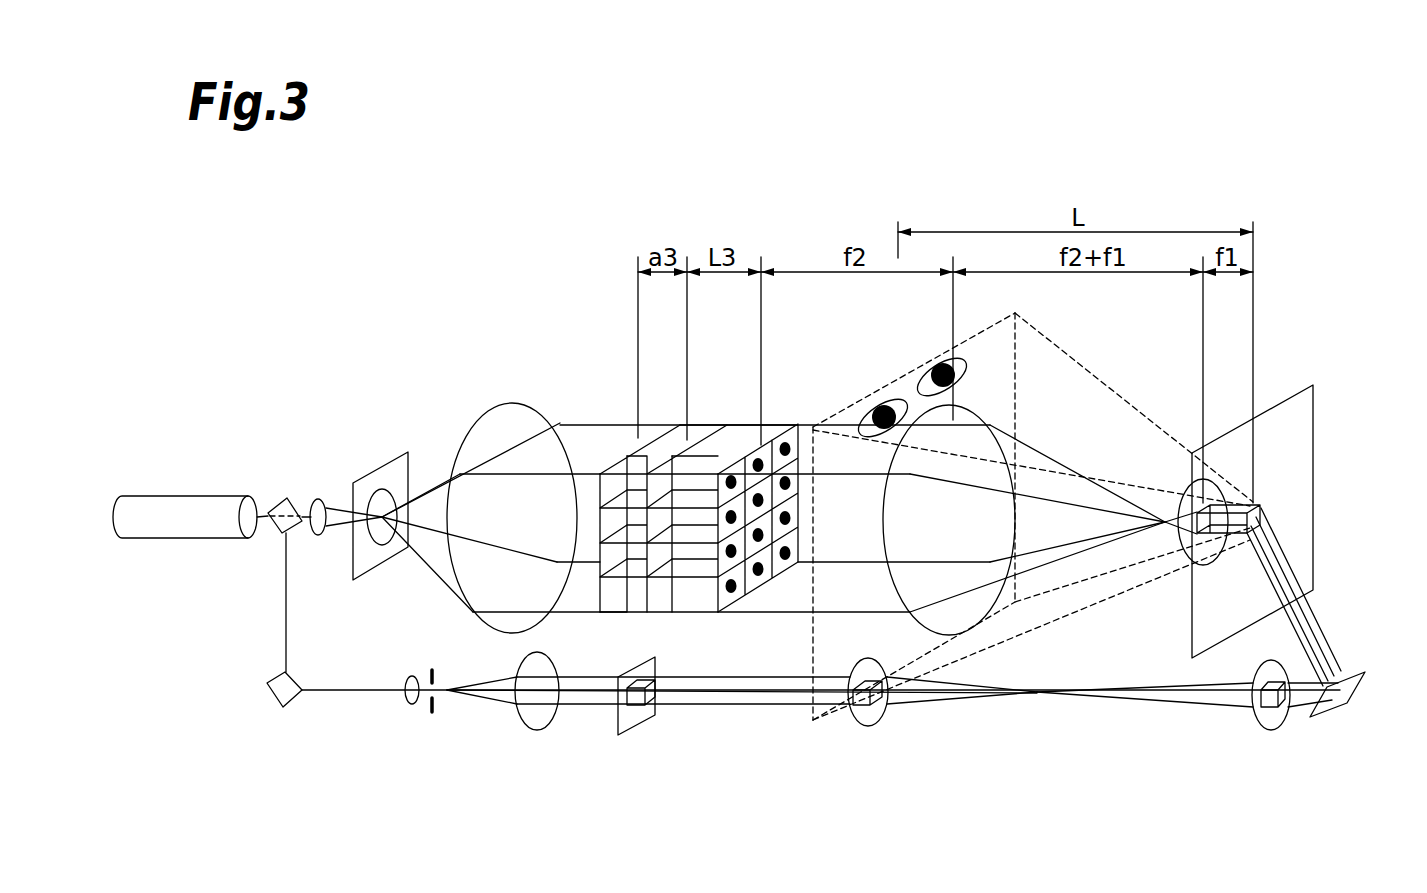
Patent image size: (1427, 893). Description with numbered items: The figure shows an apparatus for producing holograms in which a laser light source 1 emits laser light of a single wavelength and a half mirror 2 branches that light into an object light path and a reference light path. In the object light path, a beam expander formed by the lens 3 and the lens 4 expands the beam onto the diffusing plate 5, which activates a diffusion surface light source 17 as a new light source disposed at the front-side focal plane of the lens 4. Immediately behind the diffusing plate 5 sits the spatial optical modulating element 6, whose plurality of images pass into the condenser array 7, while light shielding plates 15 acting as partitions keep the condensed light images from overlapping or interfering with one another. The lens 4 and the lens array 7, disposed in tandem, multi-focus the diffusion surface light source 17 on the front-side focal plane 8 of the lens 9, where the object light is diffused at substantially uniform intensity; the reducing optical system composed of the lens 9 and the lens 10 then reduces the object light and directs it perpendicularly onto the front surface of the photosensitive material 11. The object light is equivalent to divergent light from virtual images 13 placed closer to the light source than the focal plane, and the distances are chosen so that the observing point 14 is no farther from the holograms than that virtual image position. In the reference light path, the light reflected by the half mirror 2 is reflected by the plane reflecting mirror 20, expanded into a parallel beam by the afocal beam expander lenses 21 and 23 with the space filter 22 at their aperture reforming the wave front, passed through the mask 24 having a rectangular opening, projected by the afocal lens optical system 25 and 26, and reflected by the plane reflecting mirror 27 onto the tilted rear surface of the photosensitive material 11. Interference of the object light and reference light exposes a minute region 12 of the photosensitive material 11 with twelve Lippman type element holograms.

The laser light source 1 is at (207, 496).
The half mirror 2 is at (289, 498).
The lens 3 is at (321, 499).
The lens 4 is at (524, 404).
The diffusing plate 5 is at (404, 453).
The spatial optical modulating element 6 is at (597, 601).
The condenser array 7 is at (642, 601).
The front-side focal plane 8 is at (747, 598).
The lens 9 is at (883, 520).
The lens 10 is at (1185, 499).
The photosensitive material 11 is at (1313, 414).
The minute region 12 is at (1241, 536).
The virtual images 13 is at (972, 335).
The observing point 14 is at (866, 413).
The light shielding plates 15 is at (697, 588).
The diffusion surface light source 17 is at (381, 489).
The plane reflecting mirror 20 is at (282, 709).
The beam expander lens 21 is at (411, 705).
The space filter 22 is at (436, 713).
The beam expander lens 23 is at (533, 731).
The mask 24 is at (640, 736).
The afocal lens 25 is at (868, 727).
The afocal lens 26 is at (1270, 731).
The plane reflecting mirror 27 is at (1335, 716).